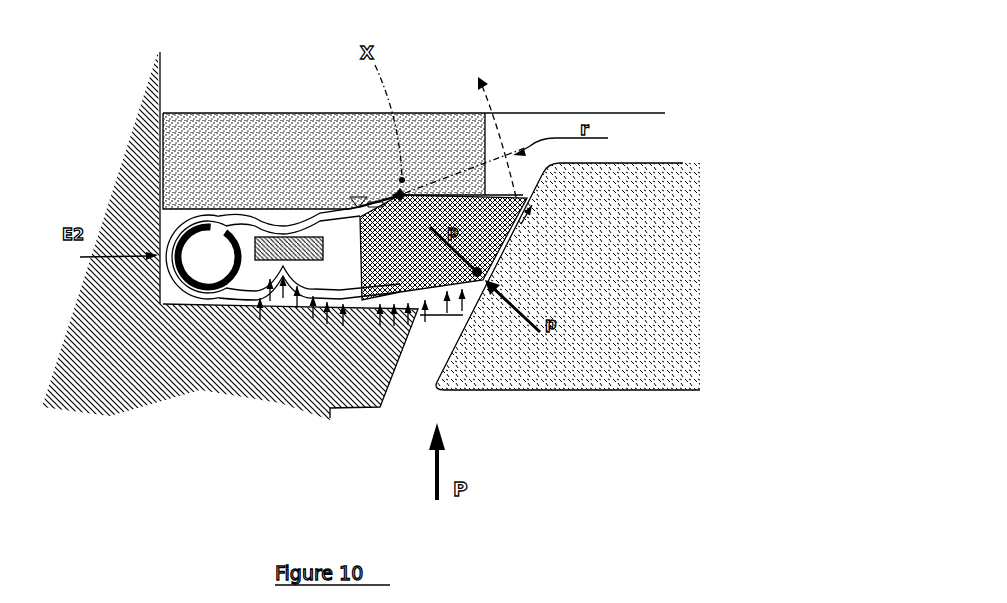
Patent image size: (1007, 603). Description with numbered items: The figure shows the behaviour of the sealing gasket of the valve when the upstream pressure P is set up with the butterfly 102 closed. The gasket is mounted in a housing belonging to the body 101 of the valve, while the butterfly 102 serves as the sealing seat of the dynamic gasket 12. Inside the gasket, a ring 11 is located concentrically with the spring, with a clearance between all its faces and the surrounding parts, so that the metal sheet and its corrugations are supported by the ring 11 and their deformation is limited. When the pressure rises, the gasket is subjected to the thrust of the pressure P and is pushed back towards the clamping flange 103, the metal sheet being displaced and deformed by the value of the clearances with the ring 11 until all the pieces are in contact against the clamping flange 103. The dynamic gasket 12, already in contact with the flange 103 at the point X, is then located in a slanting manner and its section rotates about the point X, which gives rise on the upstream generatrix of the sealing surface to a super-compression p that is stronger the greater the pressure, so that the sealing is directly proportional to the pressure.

The body 101 is at (137, 368).
The butterfly 102 is at (652, 368).
The clamping flange 103 is at (285, 143).
The ring 11 is at (283, 247).
The dynamic-sealing element 12 is at (412, 265).